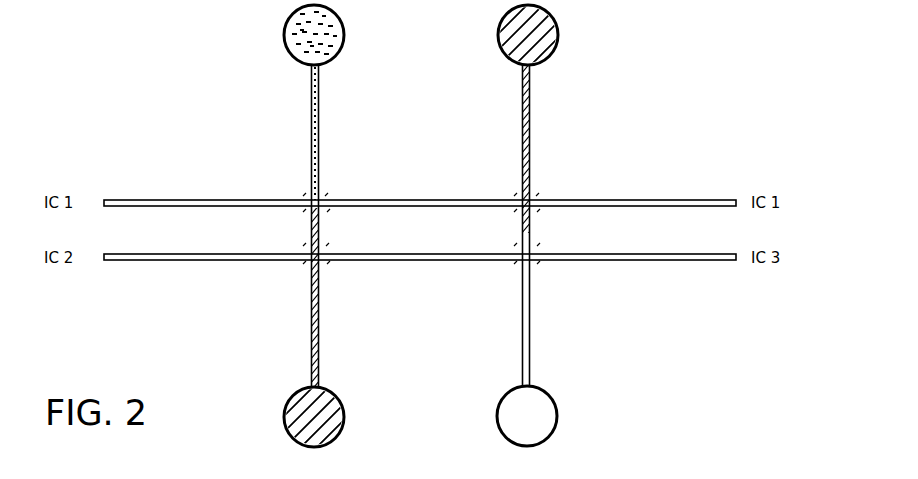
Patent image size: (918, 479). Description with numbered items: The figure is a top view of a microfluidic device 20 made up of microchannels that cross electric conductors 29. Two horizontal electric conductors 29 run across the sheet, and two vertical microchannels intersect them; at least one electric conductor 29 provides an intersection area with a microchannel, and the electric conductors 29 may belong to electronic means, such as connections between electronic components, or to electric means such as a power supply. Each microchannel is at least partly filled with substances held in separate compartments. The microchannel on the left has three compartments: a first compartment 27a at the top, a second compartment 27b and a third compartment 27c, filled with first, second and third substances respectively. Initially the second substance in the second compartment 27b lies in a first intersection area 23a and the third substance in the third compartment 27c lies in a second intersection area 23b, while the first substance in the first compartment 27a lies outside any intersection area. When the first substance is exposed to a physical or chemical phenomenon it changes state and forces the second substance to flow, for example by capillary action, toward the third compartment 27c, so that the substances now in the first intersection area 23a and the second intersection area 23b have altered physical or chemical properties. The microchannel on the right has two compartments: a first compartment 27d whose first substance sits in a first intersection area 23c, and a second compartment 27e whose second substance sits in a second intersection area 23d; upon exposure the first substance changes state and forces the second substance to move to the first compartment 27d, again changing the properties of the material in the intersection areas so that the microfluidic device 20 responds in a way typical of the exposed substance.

The microfluidic device 20 is at (708, 88).
The first intersection area 23a is at (304, 191).
The second intersection area 23b is at (324, 268).
The first intersection area 23c is at (516, 191).
The second intersection area 23d is at (535, 268).
The first compartment 27a is at (330, 57).
The second compartment 27b is at (320, 182).
The third compartment 27c is at (321, 414).
The first compartment 27d is at (537, 48).
The second compartment 27e is at (530, 315).
The electric conductor 29 is at (200, 199).